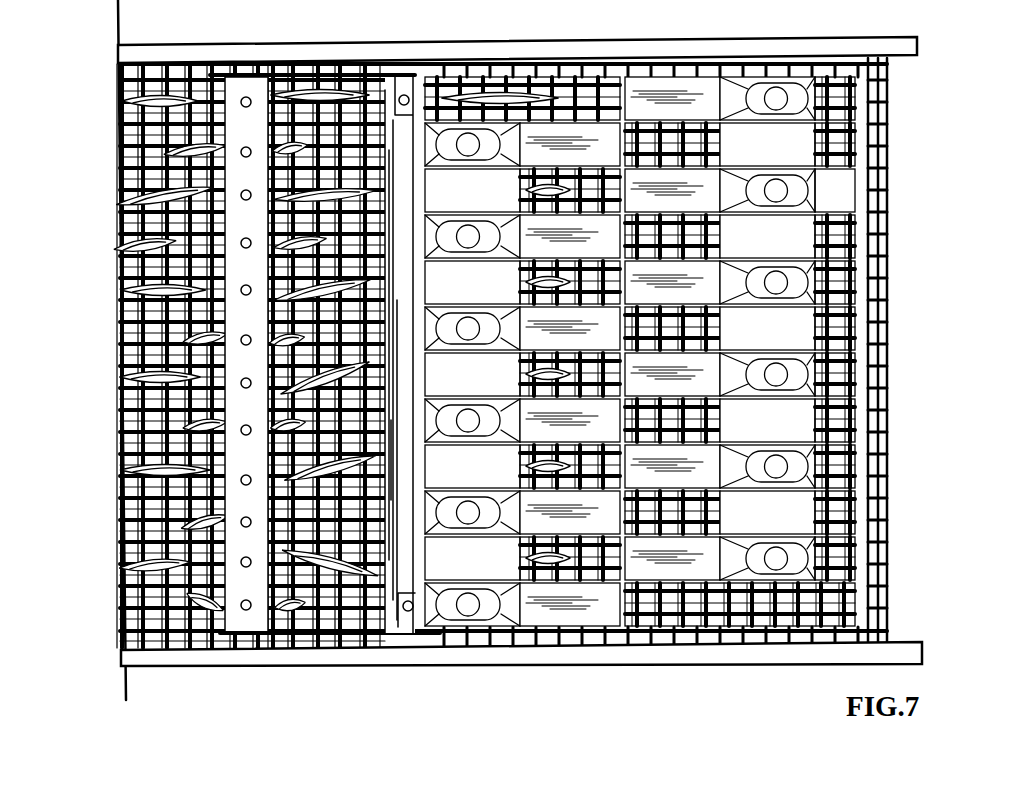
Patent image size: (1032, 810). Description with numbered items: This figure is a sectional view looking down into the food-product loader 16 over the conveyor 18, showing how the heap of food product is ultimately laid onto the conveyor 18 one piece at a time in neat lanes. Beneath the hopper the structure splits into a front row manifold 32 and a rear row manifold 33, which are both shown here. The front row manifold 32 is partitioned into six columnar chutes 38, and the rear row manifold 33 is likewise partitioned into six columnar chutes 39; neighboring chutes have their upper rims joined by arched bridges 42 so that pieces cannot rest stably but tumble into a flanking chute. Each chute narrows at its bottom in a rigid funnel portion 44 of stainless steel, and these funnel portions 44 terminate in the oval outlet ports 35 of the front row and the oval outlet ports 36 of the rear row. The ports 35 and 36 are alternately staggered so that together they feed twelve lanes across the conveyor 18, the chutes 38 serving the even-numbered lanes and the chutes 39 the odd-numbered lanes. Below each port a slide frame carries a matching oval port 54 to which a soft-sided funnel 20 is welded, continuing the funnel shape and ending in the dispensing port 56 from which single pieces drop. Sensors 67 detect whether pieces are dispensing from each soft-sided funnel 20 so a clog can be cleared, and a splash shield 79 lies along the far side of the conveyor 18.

The food-product loader 16 is at (92, 243).
The conveyor 18 is at (885, 532).
The soft-sided funnel 20 is at (792, 103).
The front row manifold 32 is at (632, 644).
The rear row manifold 33 is at (807, 186).
The outlet port 35 is at (500, 622).
The outlet port 36 is at (807, 372).
The columnar chute 38 is at (617, 622).
The columnar chute 39 is at (830, 197).
The arched bridge 42 is at (785, 244).
The funnel portion 44 is at (830, 286).
The oval port 54 is at (820, 370).
The dispensing port 56 is at (790, 468).
The sensor 67 is at (248, 608).
The splash shield 79 is at (862, 54).